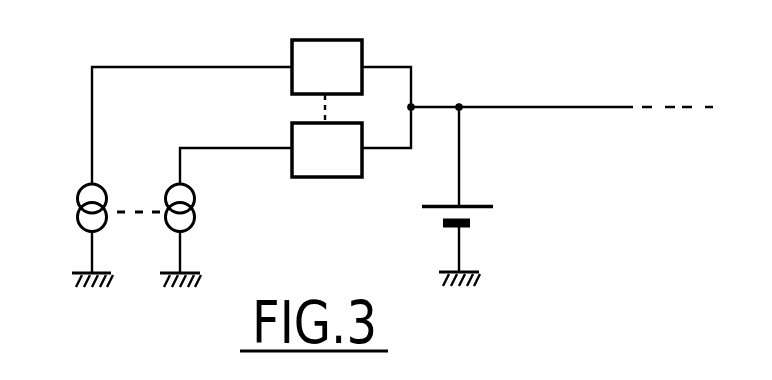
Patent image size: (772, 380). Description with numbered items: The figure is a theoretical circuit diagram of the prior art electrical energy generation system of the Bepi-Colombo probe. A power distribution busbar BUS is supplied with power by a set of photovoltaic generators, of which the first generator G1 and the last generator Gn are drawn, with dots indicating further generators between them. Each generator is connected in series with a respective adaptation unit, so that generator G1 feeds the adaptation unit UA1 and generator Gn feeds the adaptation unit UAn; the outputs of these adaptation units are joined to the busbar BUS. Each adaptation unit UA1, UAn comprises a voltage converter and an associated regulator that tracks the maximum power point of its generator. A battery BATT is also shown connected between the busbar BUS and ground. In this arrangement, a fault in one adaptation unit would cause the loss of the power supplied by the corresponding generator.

The photovoltaic generator G1 is at (74, 214).
The photovoltaic generator Gn is at (208, 205).
The adaptation unit UA1 is at (327, 67).
The adaptation unit UAn is at (327, 150).
The power distribution busbar BUS is at (551, 107).
The battery BATT is at (467, 202).